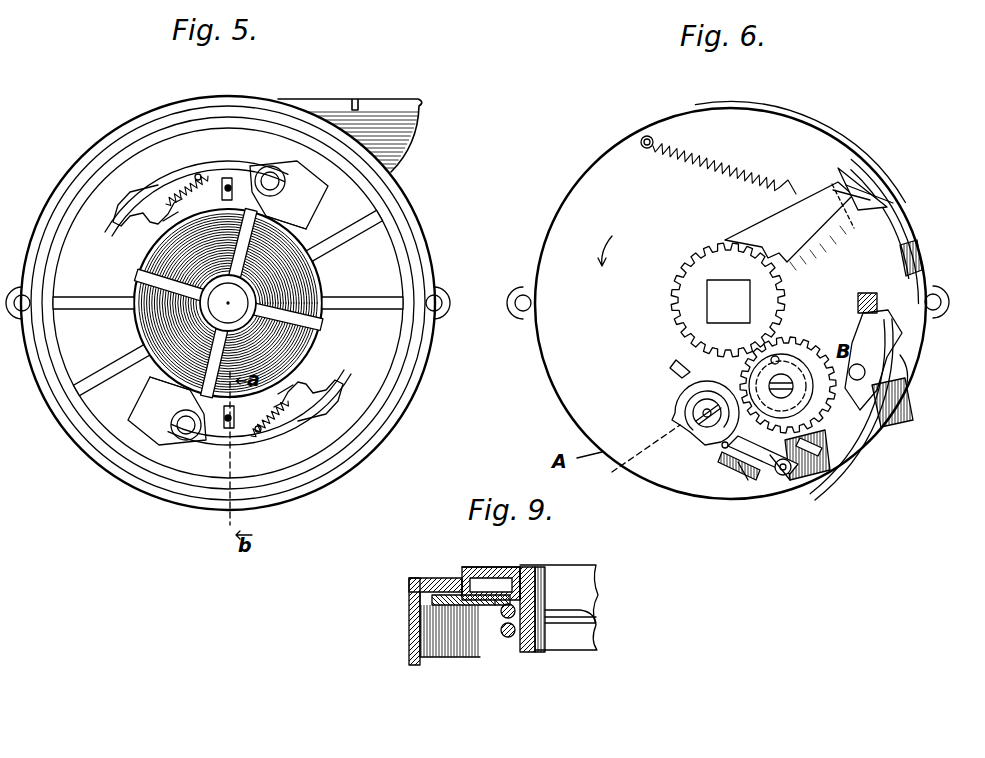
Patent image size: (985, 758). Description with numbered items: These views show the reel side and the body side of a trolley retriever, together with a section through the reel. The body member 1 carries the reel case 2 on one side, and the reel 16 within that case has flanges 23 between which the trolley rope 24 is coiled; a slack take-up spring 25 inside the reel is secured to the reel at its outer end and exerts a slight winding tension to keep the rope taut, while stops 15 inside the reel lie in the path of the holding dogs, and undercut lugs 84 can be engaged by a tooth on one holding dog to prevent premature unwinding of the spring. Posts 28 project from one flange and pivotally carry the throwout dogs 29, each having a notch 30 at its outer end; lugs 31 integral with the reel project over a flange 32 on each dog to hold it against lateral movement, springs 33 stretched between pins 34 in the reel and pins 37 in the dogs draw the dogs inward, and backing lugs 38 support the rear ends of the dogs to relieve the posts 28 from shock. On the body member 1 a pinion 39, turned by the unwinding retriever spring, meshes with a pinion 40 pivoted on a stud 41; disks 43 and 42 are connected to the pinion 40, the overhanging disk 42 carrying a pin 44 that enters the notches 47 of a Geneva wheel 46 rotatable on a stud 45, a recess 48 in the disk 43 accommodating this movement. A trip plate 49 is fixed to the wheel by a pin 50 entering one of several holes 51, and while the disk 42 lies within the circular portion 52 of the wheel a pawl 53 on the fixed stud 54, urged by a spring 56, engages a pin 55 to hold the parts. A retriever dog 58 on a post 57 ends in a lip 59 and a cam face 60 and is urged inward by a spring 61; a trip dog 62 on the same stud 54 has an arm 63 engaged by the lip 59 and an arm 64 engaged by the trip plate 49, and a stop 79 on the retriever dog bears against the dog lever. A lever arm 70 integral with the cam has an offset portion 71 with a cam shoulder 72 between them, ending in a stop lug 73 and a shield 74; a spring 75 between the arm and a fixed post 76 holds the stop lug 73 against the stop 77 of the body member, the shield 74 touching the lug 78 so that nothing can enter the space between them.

In FIG. 6, the body member 1 is at (806, 116).
In FIG. 5, the reel case 2 is at (436, 253).
In FIG. 9, the reel case 2 is at (409, 622).
In FIG. 5, the stops 15 is at (313, 333).
In FIG. 5, the reel 16 is at (176, 478).
In FIG. 9, the reel 16 is at (515, 618).
In FIG. 5, the flanges 23 is at (381, 365).
In FIG. 9, the flanges 23 is at (470, 602).
In FIG. 9, the trolley rope 24 is at (507, 618).
In FIG. 5, the slack take-up spring 25 is at (295, 283).
In FIG. 5, the posts 28 is at (188, 430).
In FIG. 9, the posts 28 is at (485, 567).
In FIG. 5, the throwout dogs 29 is at (290, 412).
In FIG. 9, the throwout dogs 29 is at (495, 600).
In FIG. 5, the notch 30 is at (313, 384).
In FIG. 5, the lugs 31 is at (233, 424).
In FIG. 9, the lugs 31 is at (500, 570).
In FIG. 5, the flange 32 is at (258, 430).
In FIG. 5, the springs 33 is at (283, 418).
In FIG. 5, the pins 34 is at (295, 398).
In FIG. 5, the pins 37 is at (230, 420).
In FIG. 5, the backing lugs 38 is at (160, 412).
In FIG. 6, the pinion 39 is at (682, 302).
In FIG. 6, the pinion 40 is at (823, 398).
In FIG. 6, the stud 41 is at (835, 430).
In FIG. 6, the disk 42 is at (823, 417).
In FIG. 6, the disk 43 is at (769, 352).
In FIG. 6, the pin 44 is at (760, 344).
In FIG. 6, the stud 45 is at (707, 420).
In FIG. 6, the Geneva wheel 46 is at (650, 415).
In FIG. 6, the notches 47 is at (670, 370).
In FIG. 6, the recess 48 is at (781, 386).
In FIG. 6, the trip plate 49 is at (677, 400).
In FIG. 6, the pin 50 is at (778, 395).
In FIG. 6, the holes 51 is at (716, 488).
In FIG. 6, the circular portion 52 is at (687, 418).
In FIG. 6, the pawl 53 is at (757, 462).
In FIG. 6, the stud 54 is at (784, 470).
In FIG. 6, the pin 55 is at (639, 463).
In FIG. 6, the spring 56 is at (782, 476).
In FIG. 6, the post 57 is at (859, 374).
In FIG. 6, the retriever dog 58 is at (875, 333).
In FIG. 6, the lip 59 is at (813, 451).
In FIG. 6, the cam face 60 is at (893, 247).
In FIG. 6, the spring 61 is at (897, 363).
In FIG. 6, the trip dog 62 is at (762, 445).
In FIG. 6, the arm 63 is at (739, 473).
In FIG. 6, the arm 64 is at (716, 445).
In FIG. 6, the lever arm 70 is at (803, 240).
In FIG. 6, the offset portion 71 is at (870, 210).
In FIG. 6, the cam shoulder 72 is at (845, 233).
In FIG. 6, the stop lug 73 is at (863, 197).
In FIG. 6, the shield 74 is at (880, 237).
In FIG. 6, the spring 75 is at (737, 163).
In FIG. 6, the fixed post 76 is at (646, 149).
In FIG. 6, the stop 77 is at (847, 167).
In FIG. 6, the lug 78 is at (917, 278).
In FIG. 6, the stop 79 is at (862, 291).
In FIG. 5, the lugs 84 is at (160, 379).
In FIG. 9, the lugs 84 is at (538, 575).